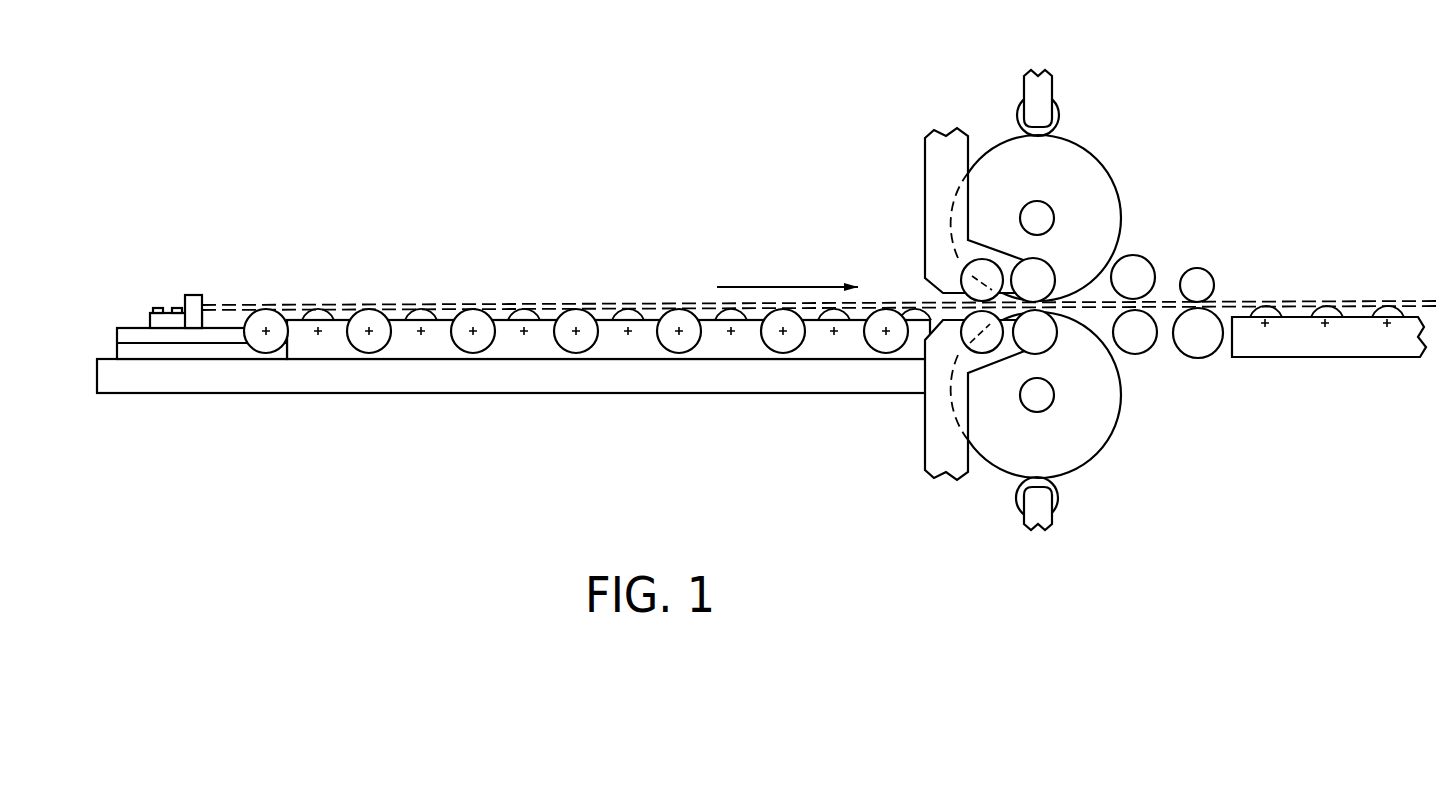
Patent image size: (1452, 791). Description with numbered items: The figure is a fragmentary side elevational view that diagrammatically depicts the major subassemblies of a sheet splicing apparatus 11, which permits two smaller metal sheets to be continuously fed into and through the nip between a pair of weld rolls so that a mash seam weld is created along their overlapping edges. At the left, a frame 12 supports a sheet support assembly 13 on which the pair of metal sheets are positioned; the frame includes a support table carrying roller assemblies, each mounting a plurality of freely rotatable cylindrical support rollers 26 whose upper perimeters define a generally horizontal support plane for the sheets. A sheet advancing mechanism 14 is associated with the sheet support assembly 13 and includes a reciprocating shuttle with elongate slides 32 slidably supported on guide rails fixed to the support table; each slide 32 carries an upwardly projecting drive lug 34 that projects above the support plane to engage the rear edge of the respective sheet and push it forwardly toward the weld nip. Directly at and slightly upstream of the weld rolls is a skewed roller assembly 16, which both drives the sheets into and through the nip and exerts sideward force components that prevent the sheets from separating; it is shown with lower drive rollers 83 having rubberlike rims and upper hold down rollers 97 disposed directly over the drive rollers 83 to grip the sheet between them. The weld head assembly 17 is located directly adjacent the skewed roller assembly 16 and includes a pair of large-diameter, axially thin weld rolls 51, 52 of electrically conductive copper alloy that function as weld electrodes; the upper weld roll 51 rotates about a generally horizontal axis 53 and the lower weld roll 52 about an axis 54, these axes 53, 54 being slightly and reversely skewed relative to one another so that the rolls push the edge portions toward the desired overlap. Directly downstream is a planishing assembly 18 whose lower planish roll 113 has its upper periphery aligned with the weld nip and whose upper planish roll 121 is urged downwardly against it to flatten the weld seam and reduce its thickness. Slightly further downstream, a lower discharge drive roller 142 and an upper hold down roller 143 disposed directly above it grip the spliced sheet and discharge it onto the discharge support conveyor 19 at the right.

The sheet splicing apparatus 11 is at (768, 296).
The frame 12 is at (392, 403).
The sheet support assembly 13 is at (628, 348).
The sheet advancing mechanism 14 is at (167, 292).
The drive lug 34 is at (193, 295).
The slide 32 is at (202, 348).
The support roller 26 is at (474, 343).
The skewed roller assembly 16 is at (934, 268).
The weld head assembly 17 is at (1063, 164).
The upper weld roll 51 is at (1070, 157).
The lower weld roll 52 is at (1092, 440).
The rotational axis of upper weld roll 53 is at (1057, 113).
The rotational axis of lower weld roll 54 is at (1060, 502).
The hold down roller 97 is at (1038, 273).
The drive roller 83 is at (1035, 340).
The planishing assembly 18 is at (1201, 279).
The upper planish roll 121 is at (1140, 268).
The lower planish roll 113 is at (1133, 342).
The upper hold down roller 143 is at (1200, 290).
The lower discharge drive roller 142 is at (1198, 342).
The discharge support conveyor 19 is at (1356, 366).